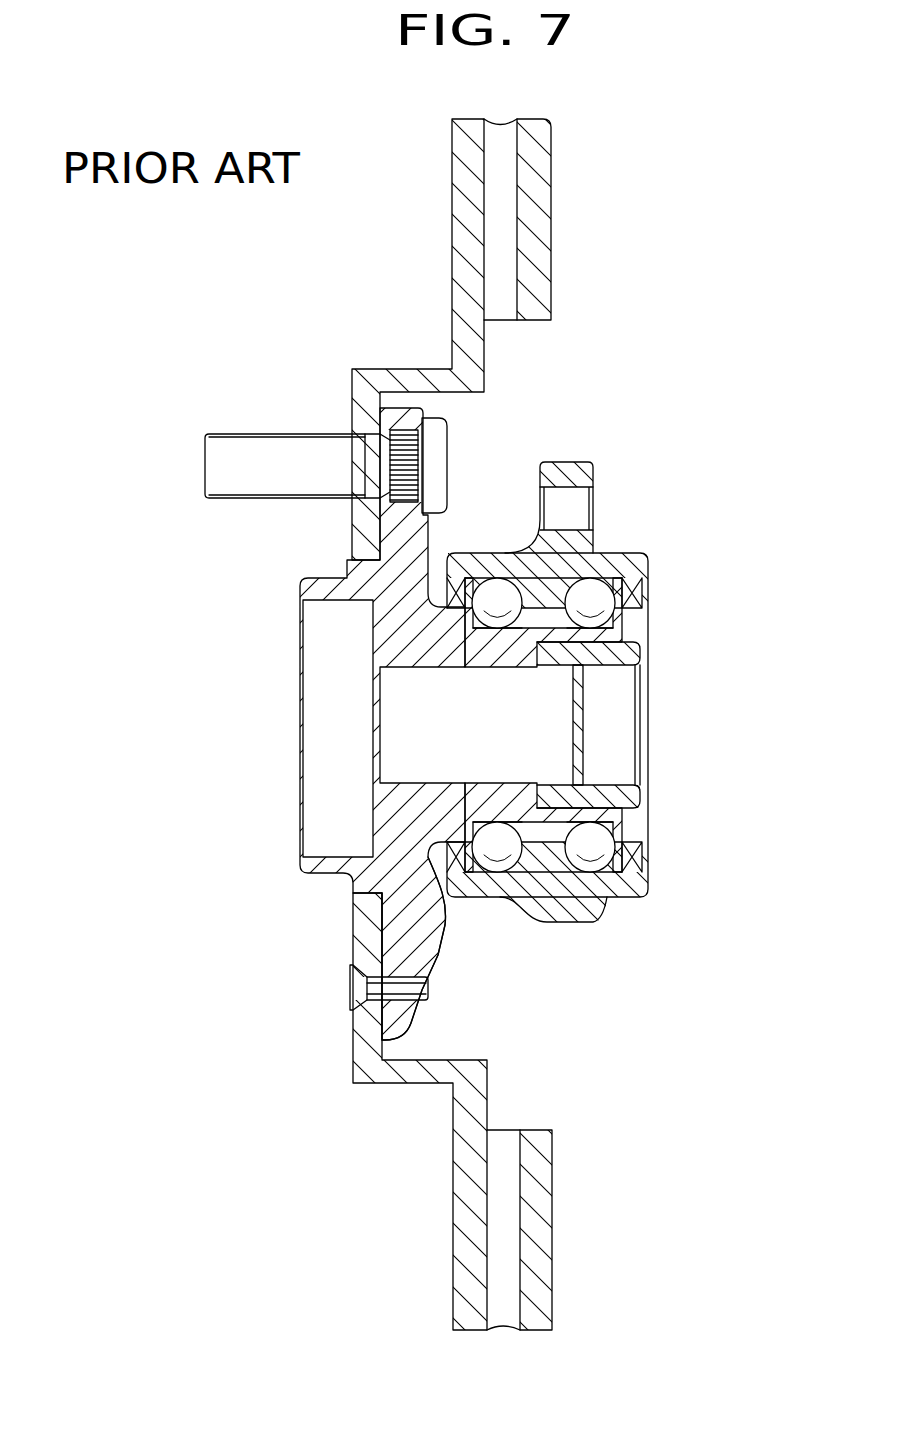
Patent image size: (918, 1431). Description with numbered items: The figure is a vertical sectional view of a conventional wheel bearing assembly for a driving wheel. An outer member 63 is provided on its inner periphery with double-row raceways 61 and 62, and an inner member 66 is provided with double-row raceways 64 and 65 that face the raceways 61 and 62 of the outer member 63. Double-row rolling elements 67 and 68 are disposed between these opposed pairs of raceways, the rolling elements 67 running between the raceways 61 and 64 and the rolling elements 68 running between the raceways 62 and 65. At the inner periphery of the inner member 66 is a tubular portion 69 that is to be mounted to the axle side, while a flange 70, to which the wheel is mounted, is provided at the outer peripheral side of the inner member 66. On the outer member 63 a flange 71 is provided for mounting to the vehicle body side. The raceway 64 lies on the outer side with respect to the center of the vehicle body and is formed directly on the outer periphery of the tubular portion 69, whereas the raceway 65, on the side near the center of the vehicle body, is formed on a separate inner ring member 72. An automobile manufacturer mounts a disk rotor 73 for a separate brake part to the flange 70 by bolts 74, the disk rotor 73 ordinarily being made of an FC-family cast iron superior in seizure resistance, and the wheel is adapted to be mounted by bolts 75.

The raceway 61 is at (492, 580).
The raceway 62 is at (592, 580).
The outer member 63 is at (537, 456).
The raceway 64 is at (480, 633).
The raceway 65 is at (645, 632).
The inner member 66 is at (308, 570).
The rolling elements 67 is at (507, 624).
The rolling elements 68 is at (563, 634).
The tubular portion 69 is at (602, 795).
The flange 70 is at (407, 947).
The flange 71 is at (578, 464).
The inner ring member 72 is at (600, 652).
The disk rotor 73 is at (468, 1217).
The bolts 74 is at (350, 988).
The bolts 75 is at (240, 455).